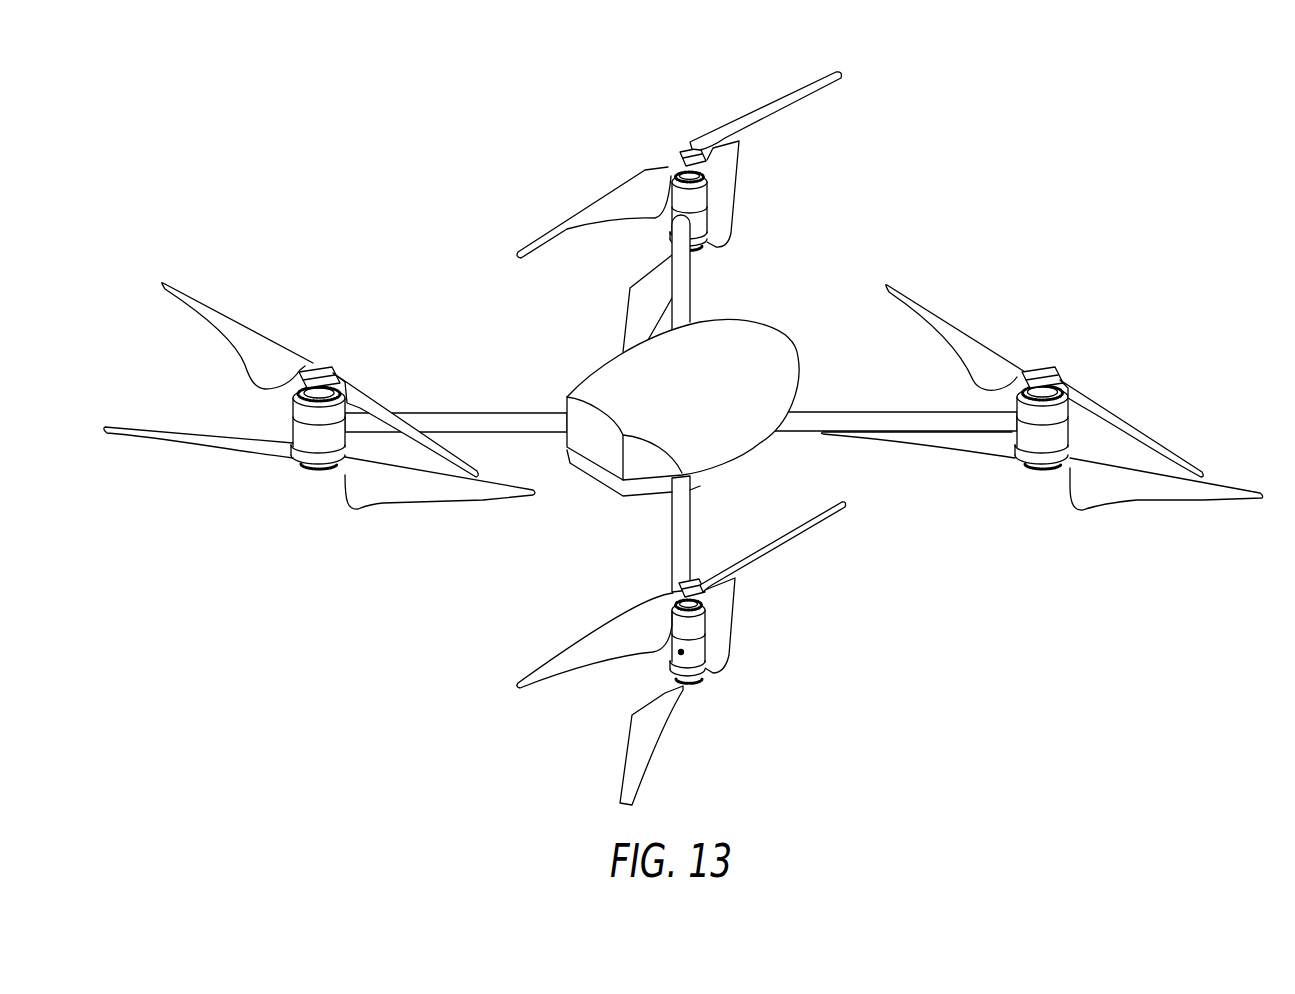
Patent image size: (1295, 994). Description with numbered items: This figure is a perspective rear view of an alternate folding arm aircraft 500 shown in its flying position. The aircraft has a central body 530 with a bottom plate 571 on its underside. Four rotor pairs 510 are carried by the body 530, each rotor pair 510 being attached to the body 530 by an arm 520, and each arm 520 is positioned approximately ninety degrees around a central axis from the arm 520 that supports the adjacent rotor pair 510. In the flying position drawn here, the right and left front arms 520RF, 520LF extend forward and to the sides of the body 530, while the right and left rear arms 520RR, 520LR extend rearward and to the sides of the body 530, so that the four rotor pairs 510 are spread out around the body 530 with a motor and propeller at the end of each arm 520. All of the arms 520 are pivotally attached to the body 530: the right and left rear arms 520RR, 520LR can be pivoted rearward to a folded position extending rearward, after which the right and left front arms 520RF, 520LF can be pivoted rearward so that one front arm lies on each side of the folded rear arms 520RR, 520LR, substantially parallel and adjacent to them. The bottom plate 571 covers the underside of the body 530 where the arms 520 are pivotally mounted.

The folding arm aircraft 500 is at (906, 180).
The rotor pair 510 is at (1050, 385).
The arm 520 is at (886, 421).
The left front arm 520LF is at (691, 290).
The left rear arm 520LR is at (509, 405).
The right front arm 520RF is at (968, 433).
The right rear arm 520RR is at (693, 543).
The body 530 is at (758, 322).
The bottom plate 571 is at (596, 490).